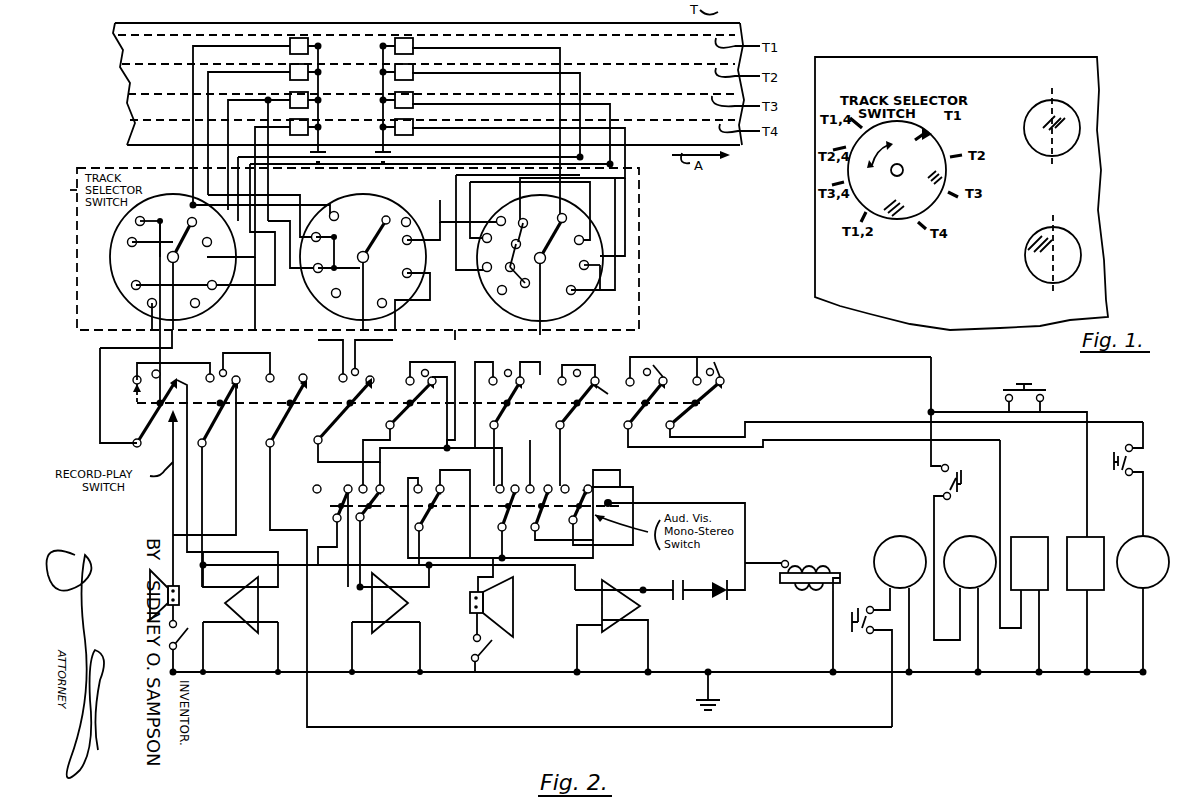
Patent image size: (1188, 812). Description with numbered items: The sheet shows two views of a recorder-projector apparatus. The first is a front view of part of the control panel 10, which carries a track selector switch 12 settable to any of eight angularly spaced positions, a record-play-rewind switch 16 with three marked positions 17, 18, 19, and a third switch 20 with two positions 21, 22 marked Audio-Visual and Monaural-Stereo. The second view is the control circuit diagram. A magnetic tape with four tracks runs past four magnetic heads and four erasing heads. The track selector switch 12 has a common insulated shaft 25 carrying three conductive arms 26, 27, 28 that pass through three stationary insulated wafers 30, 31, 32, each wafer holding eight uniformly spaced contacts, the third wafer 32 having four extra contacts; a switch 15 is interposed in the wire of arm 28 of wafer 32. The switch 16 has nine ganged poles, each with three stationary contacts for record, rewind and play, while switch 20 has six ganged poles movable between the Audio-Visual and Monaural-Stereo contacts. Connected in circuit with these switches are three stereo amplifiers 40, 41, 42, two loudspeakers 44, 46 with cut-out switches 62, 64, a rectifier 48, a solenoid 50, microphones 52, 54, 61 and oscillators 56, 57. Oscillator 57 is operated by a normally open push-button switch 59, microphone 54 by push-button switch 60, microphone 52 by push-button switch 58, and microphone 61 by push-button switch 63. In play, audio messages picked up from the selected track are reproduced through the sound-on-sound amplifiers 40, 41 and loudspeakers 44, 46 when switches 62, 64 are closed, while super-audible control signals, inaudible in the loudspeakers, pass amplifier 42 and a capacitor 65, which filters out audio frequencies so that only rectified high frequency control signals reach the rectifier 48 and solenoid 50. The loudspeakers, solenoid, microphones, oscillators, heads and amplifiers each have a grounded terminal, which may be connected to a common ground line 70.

In FIG. 1, the control panel 10 is at (905, 300).
In FIG. 1, the track selector switch 12 is at (893, 218).
In FIG. 2, the track selector switch 12 is at (59, 190).
In FIG. 2, the switch 15 is at (428, 338).
In FIG. 1, the record-play-rewind switch 16 is at (1081, 126).
In FIG. 2, the record-play-rewind switch 16 is at (312, 385).
In FIG. 1, the record position 17 is at (1052, 90).
In FIG. 1, the play position 18 is at (1068, 178).
In FIG. 1, the rewind position 19 is at (985, 128).
In FIG. 1, the audio-visual/monaural-stereo switch 20 is at (1081, 254).
In FIG. 2, the audio-visual/monaural-stereo switch 20 is at (400, 515).
In FIG. 1, the audio-visual position 21 is at (1030, 222).
In FIG. 1, the monaural-stereo position 22 is at (1024, 300).
In FIG. 2, the common insulated shaft 25 is at (262, 258).
In FIG. 2, the conductive arm 26 is at (180, 235).
In FIG. 2, the conductive arm 27 is at (372, 200).
In FIG. 2, the conductive arm 28 is at (556, 238).
In FIG. 2, the stationary insulated wafer 30 is at (162, 190).
In FIG. 2, the stationary insulated wafer 31 is at (385, 195).
In FIG. 2, the stationary insulated wafer 32 is at (520, 318).
In FIG. 2, the stereo amplifier 40 is at (247, 618).
In FIG. 2, the stereo amplifier 41 is at (395, 618).
In FIG. 2, the stereo amplifier 42 is at (610, 625).
In FIG. 2, the loudspeaker 44 is at (164, 572).
In FIG. 2, the loudspeaker 46 is at (500, 625).
In FIG. 2, the rectifier 48 is at (718, 596).
In FIG. 2, the solenoid 50 is at (785, 583).
In FIG. 2, the microphone 52 is at (912, 522).
In FIG. 2, the microphone 54 is at (983, 522).
In FIG. 2, the oscillator 56 is at (1042, 520).
In FIG. 2, the oscillator 57 is at (1100, 520).
In FIG. 2, the push-button switch 58 is at (876, 594).
In FIG. 2, the push-button switch 59 is at (1040, 388).
In FIG. 2, the push-button switch 60 is at (960, 470).
In FIG. 2, the microphone 61 is at (1156, 530).
In FIG. 2, the cut-out switch 62 is at (180, 620).
In FIG. 2, the push-button switch 63 is at (1118, 470).
In FIG. 2, the cut-out switch 64 is at (486, 656).
In FIG. 2, the capacitor 65 is at (690, 595).
In FIG. 2, the common ground line 70 is at (712, 690).